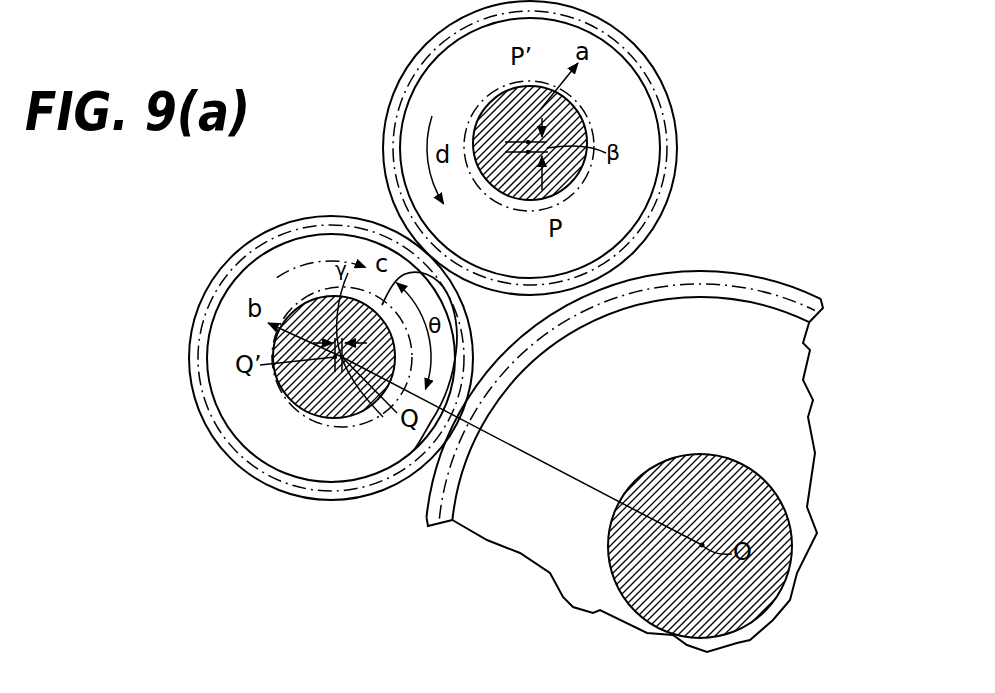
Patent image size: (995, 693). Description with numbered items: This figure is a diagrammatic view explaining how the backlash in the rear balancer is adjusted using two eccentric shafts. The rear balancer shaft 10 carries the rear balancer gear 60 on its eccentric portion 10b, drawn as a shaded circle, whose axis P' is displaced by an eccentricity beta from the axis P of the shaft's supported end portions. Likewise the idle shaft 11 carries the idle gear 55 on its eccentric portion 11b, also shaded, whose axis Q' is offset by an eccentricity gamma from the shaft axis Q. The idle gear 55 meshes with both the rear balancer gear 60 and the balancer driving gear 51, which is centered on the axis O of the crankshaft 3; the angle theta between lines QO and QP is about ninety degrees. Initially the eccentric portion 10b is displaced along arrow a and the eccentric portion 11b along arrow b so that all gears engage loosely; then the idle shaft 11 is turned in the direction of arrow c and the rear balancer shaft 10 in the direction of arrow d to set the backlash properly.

The rear balancer gear 60 is at (660, 105).
The rear balancer shaft 10 is at (556, 179).
The eccentric portion 10b is at (551, 146).
The idle gear 55 is at (348, 226).
The idle shaft 11 is at (352, 425).
The eccentric portion 11b is at (410, 273).
The balancer driving gear 51 is at (757, 292).
The crankshaft 3 is at (748, 462).